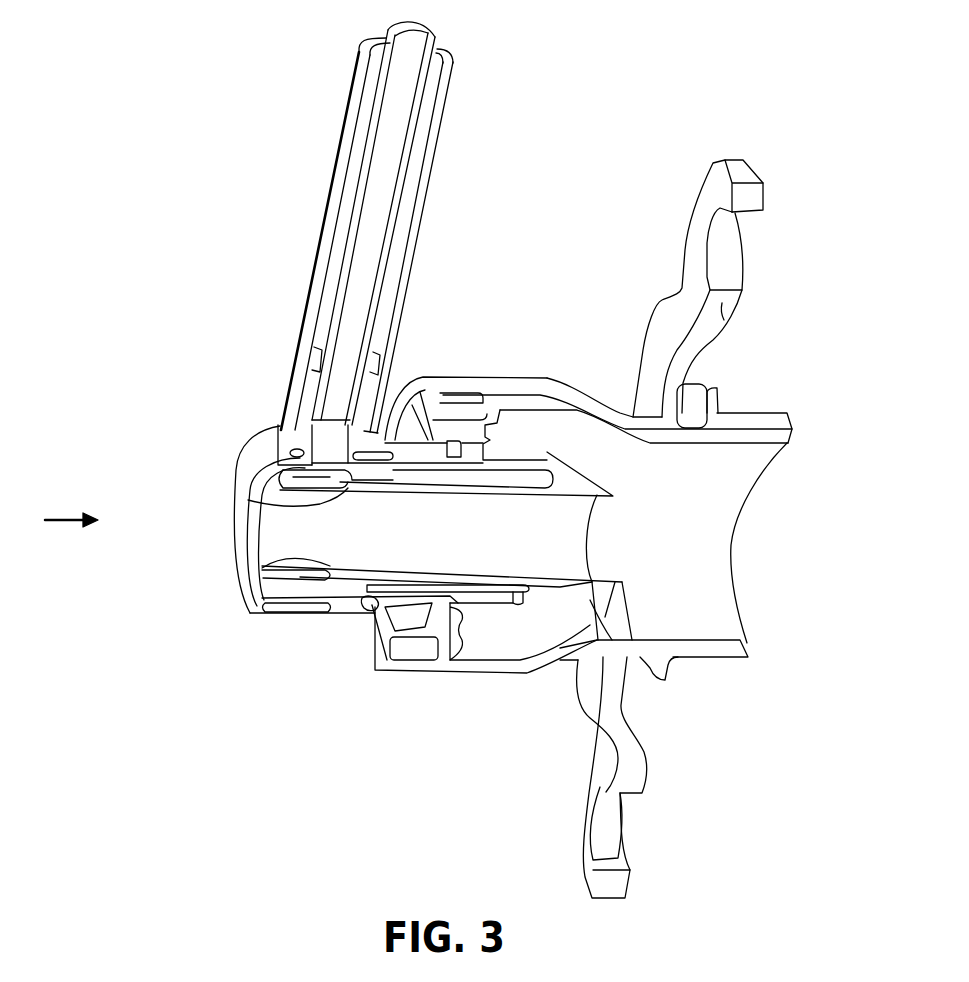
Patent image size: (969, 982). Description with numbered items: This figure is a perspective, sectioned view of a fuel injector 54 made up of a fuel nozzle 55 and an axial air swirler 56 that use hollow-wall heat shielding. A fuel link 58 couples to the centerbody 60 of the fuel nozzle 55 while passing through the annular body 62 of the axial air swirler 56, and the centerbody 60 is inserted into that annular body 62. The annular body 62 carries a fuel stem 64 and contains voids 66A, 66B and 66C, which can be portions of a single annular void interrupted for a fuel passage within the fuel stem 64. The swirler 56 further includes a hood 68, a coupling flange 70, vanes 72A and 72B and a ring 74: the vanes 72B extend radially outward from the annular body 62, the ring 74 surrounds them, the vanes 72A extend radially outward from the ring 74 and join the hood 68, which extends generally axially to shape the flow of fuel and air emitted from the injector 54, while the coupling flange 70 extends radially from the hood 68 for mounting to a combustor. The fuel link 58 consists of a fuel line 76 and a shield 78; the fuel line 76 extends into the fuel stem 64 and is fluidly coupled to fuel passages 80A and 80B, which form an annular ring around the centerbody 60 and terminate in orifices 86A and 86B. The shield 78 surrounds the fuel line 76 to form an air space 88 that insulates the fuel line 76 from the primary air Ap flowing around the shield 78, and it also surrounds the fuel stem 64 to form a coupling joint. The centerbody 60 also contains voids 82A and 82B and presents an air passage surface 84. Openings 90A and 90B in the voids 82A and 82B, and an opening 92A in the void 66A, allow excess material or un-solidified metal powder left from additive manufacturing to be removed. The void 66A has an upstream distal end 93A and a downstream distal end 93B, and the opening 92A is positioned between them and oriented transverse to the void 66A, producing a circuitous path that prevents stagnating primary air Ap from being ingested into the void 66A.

The fuel injector 54 is at (731, 274).
The fuel nozzle 55 is at (232, 603).
The axial air swirler 56 is at (512, 690).
The fuel link 58 is at (308, 227).
The centerbody 60 is at (456, 523).
The annular body 62 is at (374, 612).
The fuel stem 64 is at (305, 438).
The void 66A is at (285, 605).
The void 66B is at (383, 460).
The void 66C is at (297, 447).
The hood 68 is at (541, 385).
The coupling flange 70 is at (725, 320).
The vanes 72A is at (476, 410).
The vanes 72B is at (447, 622).
The ring 74 is at (430, 627).
The fuel line 76 is at (373, 138).
The shield 78 is at (445, 127).
The fuel passage 80A is at (519, 486).
The fuel passage 80B is at (489, 587).
The void 82A is at (285, 478).
The void 82B is at (257, 577).
The air passage surface 84 is at (365, 570).
The orifice 86A is at (548, 449).
The orifice 86B is at (580, 614).
The air space 88 is at (338, 230).
The opening 90A is at (252, 501).
The opening 90B is at (265, 568).
The opening 92A is at (335, 608).
The distal end 93A is at (258, 609).
The distal end 93B is at (367, 608).
The primary air Ap is at (80, 524).